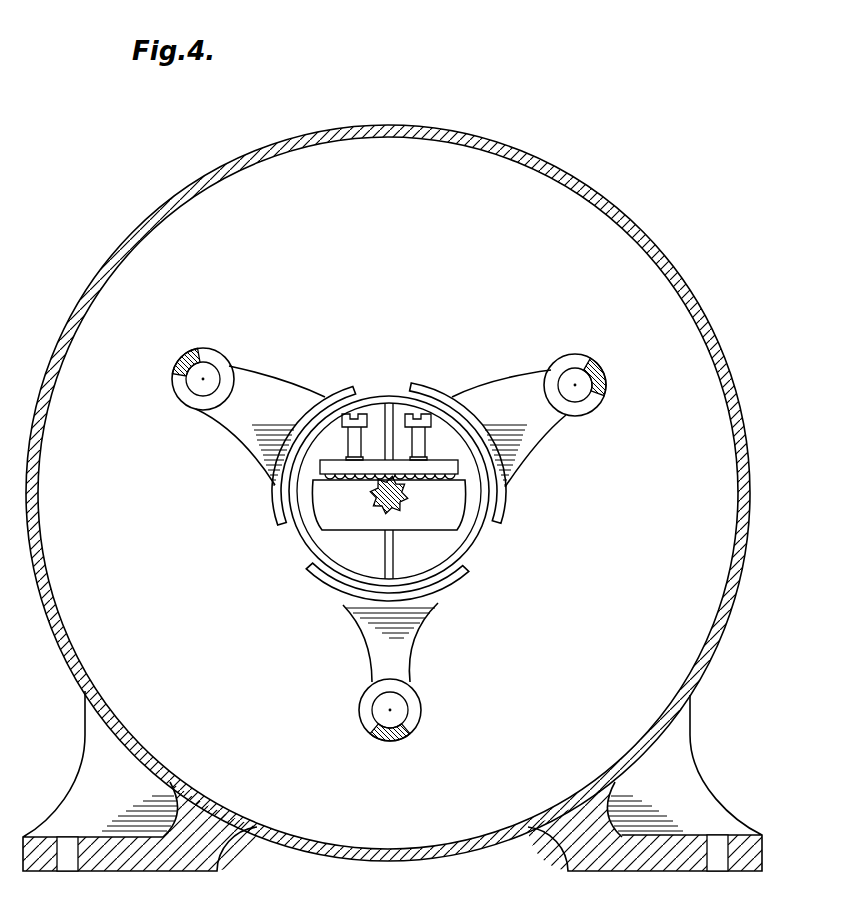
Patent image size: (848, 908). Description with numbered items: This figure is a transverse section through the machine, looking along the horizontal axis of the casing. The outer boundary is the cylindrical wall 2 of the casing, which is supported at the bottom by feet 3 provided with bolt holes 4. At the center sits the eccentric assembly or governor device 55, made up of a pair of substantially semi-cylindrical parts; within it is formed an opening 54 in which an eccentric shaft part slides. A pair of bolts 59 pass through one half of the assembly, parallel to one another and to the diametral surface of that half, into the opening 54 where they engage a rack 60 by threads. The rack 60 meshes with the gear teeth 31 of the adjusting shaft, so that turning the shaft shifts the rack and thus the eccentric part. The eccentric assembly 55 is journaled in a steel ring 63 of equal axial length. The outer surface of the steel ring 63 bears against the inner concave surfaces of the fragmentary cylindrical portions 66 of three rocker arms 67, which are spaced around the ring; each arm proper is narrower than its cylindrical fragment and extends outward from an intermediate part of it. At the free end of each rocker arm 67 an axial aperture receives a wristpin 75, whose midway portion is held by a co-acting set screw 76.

The cylindrical wall of a casing 2 is at (661, 260).
The feet 3 is at (100, 871).
The bolt holes 4 is at (66, 874).
The gear teeth 31 is at (398, 505).
The opening 54 is at (322, 519).
The eccentric assembly 55 is at (397, 411).
The bolts 59 is at (357, 406).
The rack 60 is at (355, 478).
The steel ring 63 is at (478, 554).
The fragmentary cylindrical portions 66 is at (332, 399).
The rocker arms 67 is at (532, 422).
The wristpin 75 is at (575, 375).
The set screw 76 is at (603, 378).